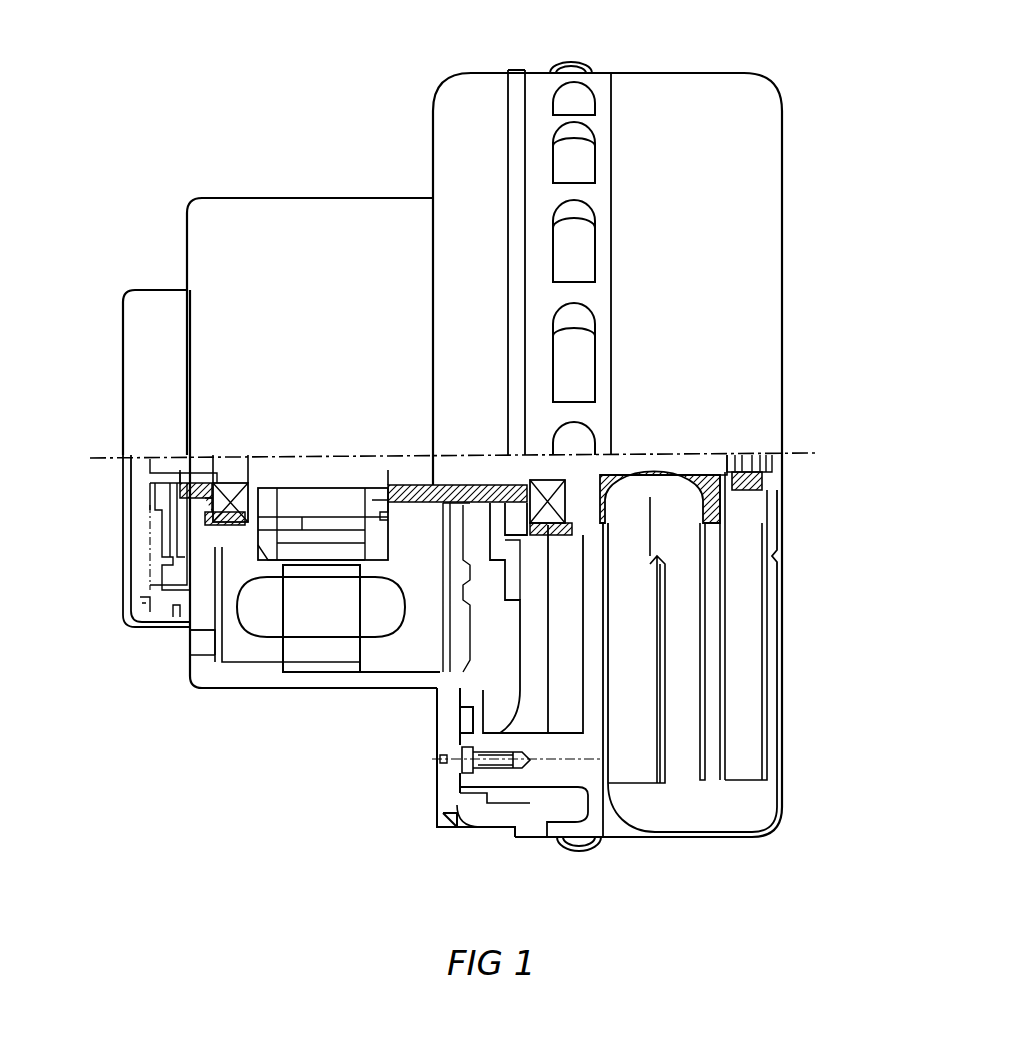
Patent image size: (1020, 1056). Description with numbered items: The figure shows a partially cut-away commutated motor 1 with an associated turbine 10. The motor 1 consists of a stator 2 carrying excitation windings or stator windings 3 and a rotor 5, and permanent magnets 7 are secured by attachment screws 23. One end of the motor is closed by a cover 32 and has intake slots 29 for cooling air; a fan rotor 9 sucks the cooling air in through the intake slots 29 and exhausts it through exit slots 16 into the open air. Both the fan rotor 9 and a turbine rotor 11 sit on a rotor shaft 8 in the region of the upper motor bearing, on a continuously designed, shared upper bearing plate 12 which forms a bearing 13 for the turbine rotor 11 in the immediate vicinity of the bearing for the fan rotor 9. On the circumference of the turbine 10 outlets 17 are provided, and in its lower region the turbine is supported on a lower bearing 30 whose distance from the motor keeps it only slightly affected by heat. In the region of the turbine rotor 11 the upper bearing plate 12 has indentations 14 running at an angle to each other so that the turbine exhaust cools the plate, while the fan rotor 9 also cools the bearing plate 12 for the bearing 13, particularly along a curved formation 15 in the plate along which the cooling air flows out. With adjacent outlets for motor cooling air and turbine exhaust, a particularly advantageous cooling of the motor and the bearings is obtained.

The motor 1 is at (130, 220).
The stator 2 is at (310, 665).
The stator windings 3 is at (258, 635).
The rotor 5 is at (232, 560).
The permanent magnets 7 is at (352, 548).
The rotor shaft 8 is at (690, 458).
The fan rotor 9 is at (437, 690).
The turbine 10 is at (740, 150).
The turbine rotor 11 is at (608, 625).
The upper bearing plate 12 is at (520, 725).
The bearing 13 is at (547, 482).
The indentations 14 is at (527, 490).
The curved formation 15 is at (565, 738).
The exit slots 16 is at (428, 710).
The outlets 17 is at (572, 95).
The attachment screws 23 is at (427, 485).
The intake slots 29 is at (205, 640).
The lower bearing 30 is at (760, 480).
The cover 32 is at (145, 390).